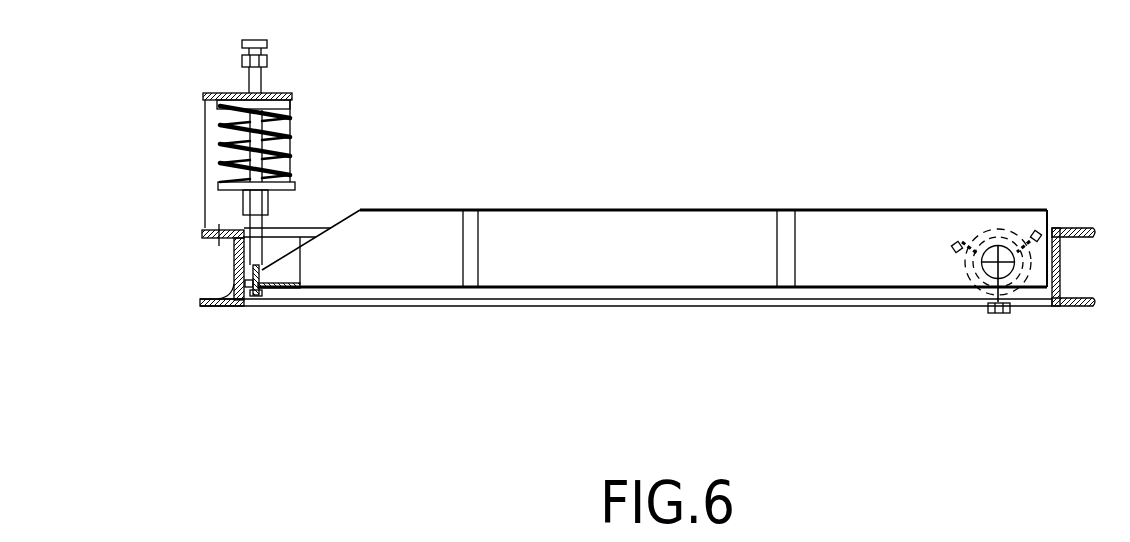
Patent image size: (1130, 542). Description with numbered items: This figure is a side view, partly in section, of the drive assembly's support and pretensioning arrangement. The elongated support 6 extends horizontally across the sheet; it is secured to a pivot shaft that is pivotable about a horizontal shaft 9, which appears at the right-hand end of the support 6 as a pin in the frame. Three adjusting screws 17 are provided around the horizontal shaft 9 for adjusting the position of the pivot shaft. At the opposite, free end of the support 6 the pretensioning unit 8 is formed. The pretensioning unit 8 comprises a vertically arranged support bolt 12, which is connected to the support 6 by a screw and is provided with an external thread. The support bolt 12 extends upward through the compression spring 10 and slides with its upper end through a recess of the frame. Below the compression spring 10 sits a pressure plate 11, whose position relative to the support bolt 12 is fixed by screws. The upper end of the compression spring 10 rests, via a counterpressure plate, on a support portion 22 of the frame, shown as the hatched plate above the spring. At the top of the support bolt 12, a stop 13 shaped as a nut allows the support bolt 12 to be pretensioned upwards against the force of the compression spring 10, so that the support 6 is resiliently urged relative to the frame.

The support 6 is at (628, 255).
The pretensioning unit 8 is at (193, 180).
The horizontal shaft 9 is at (1000, 262).
The compression spring 10 is at (290, 138).
The pressure plate 11 is at (297, 186).
The support bolt 12 is at (220, 118).
The stop 13 is at (268, 43).
The adjusting screws 17 is at (952, 230).
The support portion 22 is at (216, 93).